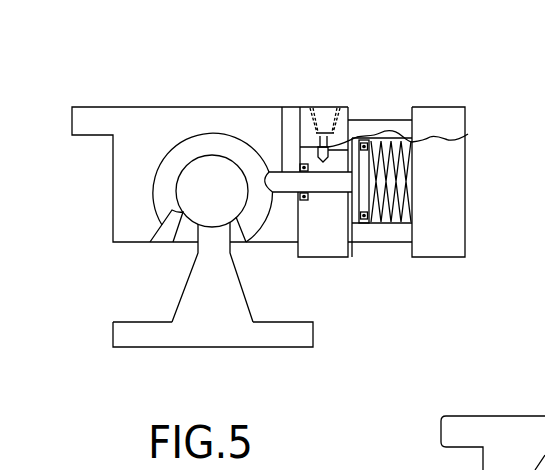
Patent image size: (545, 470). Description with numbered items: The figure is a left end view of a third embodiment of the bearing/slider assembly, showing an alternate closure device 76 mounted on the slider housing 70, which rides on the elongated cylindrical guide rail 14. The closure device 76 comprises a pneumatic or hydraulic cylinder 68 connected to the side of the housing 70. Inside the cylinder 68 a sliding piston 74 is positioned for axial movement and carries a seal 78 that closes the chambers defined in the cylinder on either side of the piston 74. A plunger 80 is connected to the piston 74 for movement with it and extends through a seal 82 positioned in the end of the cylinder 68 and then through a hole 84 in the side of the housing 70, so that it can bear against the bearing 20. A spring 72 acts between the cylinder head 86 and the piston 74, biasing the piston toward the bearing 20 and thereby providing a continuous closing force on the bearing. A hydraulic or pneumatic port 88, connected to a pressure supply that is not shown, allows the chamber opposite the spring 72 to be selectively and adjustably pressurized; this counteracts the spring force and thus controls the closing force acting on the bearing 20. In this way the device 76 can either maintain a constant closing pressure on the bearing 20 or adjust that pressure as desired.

The guide rail 14 is at (150, 242).
The bearing 20 is at (153, 186).
The pneumatic or hydraulic cylinder 68 is at (412, 233).
The slider housing 70 is at (260, 128).
The spring 72 is at (387, 141).
The piston 74 is at (344, 218).
The closure device 76 is at (463, 106).
The seal 78 is at (353, 216).
The plunger 80 is at (325, 192).
The seal 82 is at (300, 200).
The hole 84 is at (282, 107).
The cylinder head 86 is at (468, 134).
The hydraulic or pneumatic port 88 is at (312, 140).